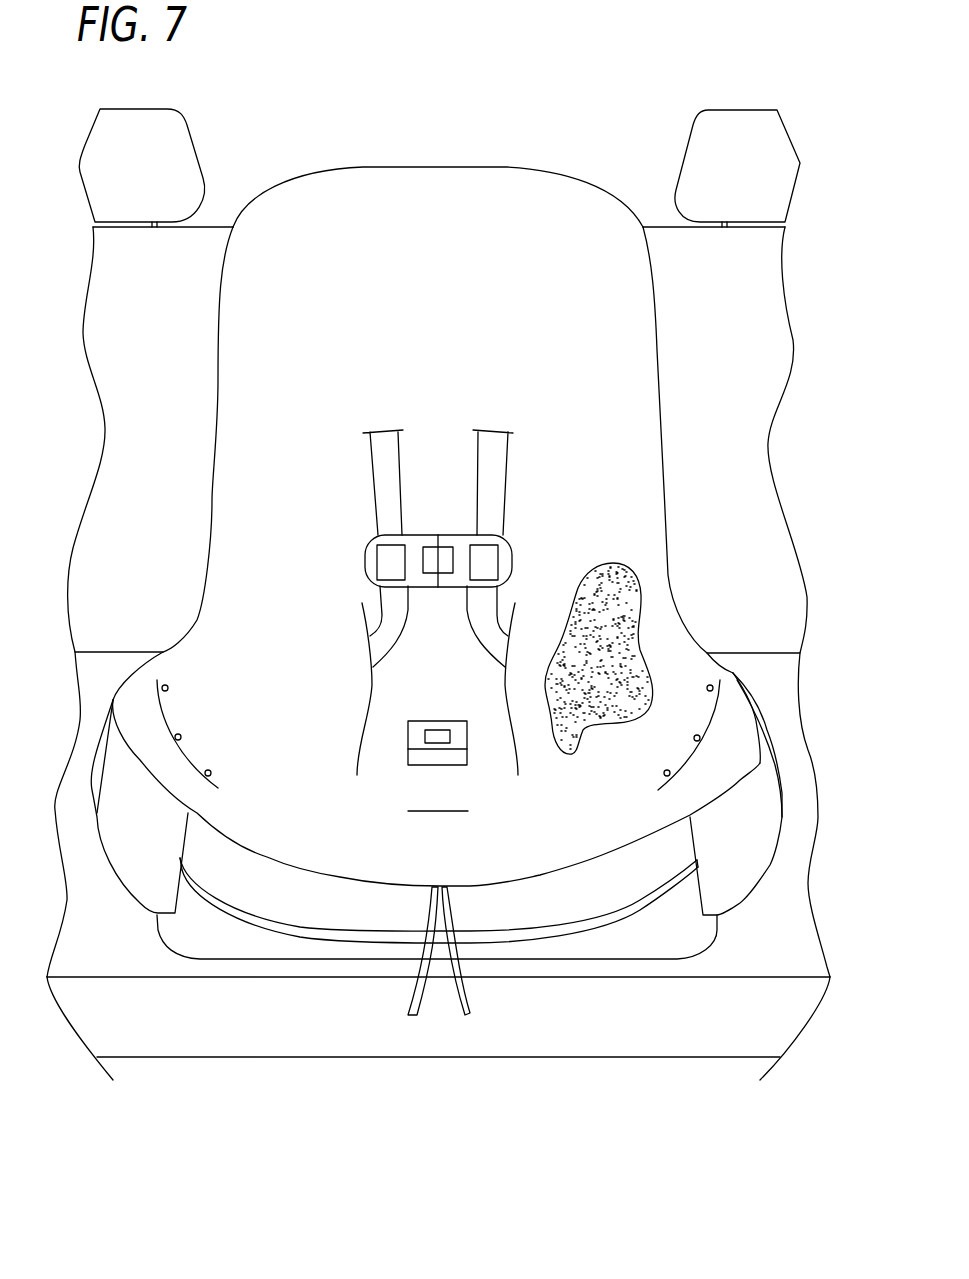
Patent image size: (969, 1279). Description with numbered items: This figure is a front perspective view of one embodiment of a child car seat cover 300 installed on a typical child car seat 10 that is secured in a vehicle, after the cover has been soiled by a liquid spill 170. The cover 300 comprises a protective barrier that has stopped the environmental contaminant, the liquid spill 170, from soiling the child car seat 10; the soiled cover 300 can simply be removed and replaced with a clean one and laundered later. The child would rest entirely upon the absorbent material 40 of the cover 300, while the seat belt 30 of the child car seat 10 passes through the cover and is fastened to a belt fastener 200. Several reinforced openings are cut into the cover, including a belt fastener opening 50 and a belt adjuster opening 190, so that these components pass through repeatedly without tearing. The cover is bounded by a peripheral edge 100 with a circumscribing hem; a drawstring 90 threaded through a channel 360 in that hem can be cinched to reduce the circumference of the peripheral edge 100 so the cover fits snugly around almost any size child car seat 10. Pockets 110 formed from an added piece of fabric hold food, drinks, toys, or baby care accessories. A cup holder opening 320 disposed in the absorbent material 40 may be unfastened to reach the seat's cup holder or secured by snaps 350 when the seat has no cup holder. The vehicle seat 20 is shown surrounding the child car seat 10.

The child car seat 10 is at (642, 938).
The vehicle seat back 20 is at (135, 437).
The seat belt 30 is at (477, 457).
The absorbent material 40 is at (525, 235).
The belt fastener opening 50 is at (437, 763).
The drawstring 90 is at (407, 1000).
The peripheral edge 100 is at (268, 857).
The pockets 110 is at (775, 762).
The liquid spill 170 is at (612, 607).
The belt adjuster opening 190 is at (450, 812).
The belt fastener 200 is at (457, 535).
The child car seat cover 300 is at (373, 200).
The cup holder opening 320 is at (177, 753).
The snaps 350 is at (208, 773).
The channel 360 is at (565, 925).